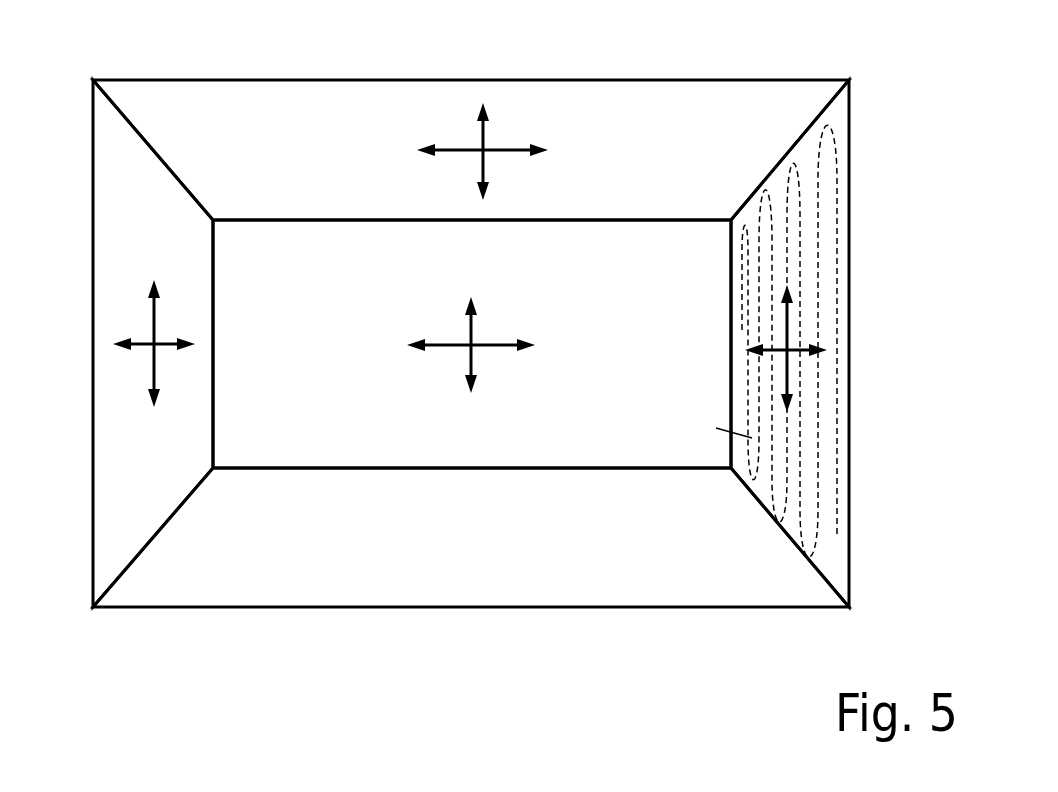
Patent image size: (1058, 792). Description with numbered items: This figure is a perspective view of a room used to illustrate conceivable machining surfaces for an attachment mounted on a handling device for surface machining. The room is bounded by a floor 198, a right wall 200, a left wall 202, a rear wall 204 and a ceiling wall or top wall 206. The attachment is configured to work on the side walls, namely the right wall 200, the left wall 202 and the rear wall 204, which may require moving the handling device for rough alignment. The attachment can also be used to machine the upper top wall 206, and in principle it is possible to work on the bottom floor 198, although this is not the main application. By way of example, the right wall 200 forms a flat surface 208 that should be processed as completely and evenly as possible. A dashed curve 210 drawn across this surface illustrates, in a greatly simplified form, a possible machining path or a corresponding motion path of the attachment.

The floor 198 is at (348, 553).
The right wall 200 is at (779, 187).
The left wall 202 is at (128, 228).
The rear wall 204 is at (341, 360).
The top wall 206 is at (352, 188).
The flat surface 208 is at (752, 438).
The dashed curve 210 is at (805, 498).